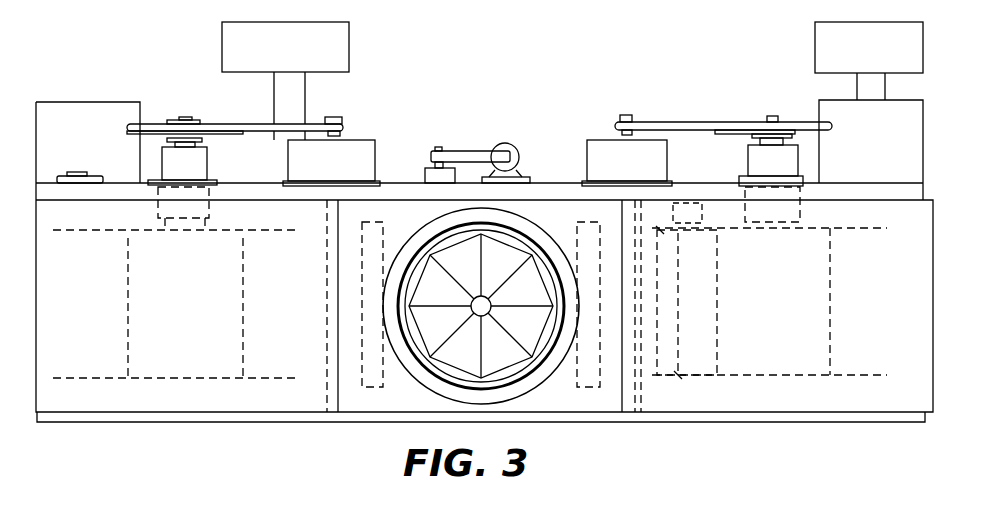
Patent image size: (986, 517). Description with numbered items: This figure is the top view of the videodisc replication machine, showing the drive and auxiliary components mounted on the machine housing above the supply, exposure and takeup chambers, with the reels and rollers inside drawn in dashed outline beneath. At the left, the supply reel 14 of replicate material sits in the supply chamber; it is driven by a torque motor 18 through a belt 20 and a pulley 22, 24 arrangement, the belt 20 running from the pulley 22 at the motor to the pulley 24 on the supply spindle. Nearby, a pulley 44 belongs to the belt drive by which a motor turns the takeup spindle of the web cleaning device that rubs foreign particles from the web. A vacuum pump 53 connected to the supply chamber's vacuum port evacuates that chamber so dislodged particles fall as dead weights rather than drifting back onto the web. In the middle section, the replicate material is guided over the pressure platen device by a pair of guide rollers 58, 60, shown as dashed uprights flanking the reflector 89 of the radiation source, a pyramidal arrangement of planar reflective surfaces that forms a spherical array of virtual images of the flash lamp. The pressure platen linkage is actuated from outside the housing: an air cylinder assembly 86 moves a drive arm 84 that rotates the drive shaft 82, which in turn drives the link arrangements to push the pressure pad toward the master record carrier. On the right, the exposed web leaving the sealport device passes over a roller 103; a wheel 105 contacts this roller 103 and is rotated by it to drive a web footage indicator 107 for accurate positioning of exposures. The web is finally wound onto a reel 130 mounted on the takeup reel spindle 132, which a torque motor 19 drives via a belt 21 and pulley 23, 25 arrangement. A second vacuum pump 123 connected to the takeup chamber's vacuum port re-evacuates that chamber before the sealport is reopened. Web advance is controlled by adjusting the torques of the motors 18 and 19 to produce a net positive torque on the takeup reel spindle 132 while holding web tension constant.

The supply reel 14 is at (286, 372).
The torque motor 18 is at (373, 160).
The torque motor 19 is at (586, 155).
The belt 20 is at (256, 125).
The belt 21 is at (690, 122).
The pulley 22 is at (338, 121).
The pulley 23 is at (740, 133).
The pulley 24 is at (178, 118).
The pulley 25 is at (626, 114).
The pulley 44 is at (98, 175).
The vacuum pump 53 is at (347, 47).
The guide roller 58 is at (387, 380).
The guide roller 60 is at (591, 388).
The drive shaft 82 is at (437, 147).
The drive arm 84 is at (471, 151).
The air cylinder assembly 86 is at (519, 148).
The reflector 89 is at (449, 258).
The roller 103 is at (670, 378).
The wheel 105 is at (668, 237).
The web footage indicator 107 is at (710, 212).
The vacuum pump 123 is at (915, 61).
The reel 130 is at (857, 372).
The takeup reel spindle 132 is at (772, 115).